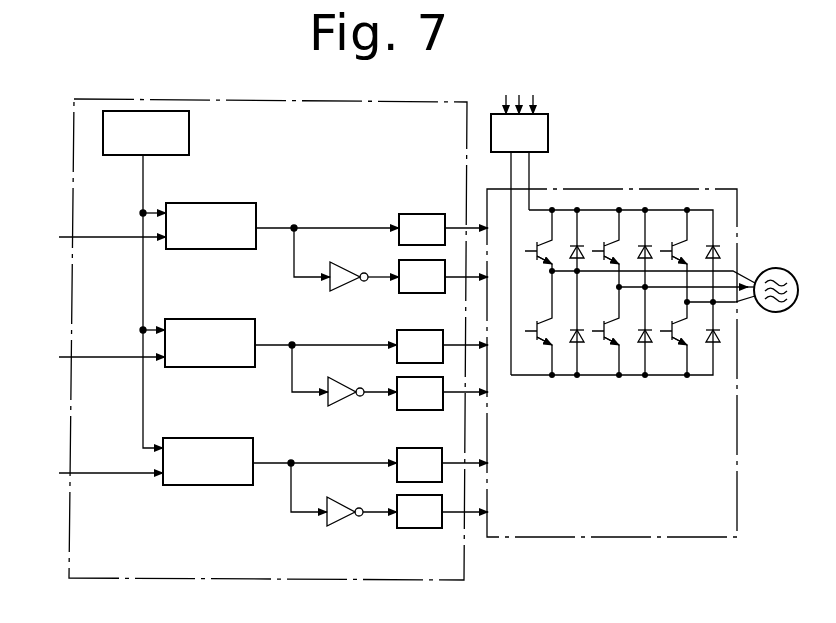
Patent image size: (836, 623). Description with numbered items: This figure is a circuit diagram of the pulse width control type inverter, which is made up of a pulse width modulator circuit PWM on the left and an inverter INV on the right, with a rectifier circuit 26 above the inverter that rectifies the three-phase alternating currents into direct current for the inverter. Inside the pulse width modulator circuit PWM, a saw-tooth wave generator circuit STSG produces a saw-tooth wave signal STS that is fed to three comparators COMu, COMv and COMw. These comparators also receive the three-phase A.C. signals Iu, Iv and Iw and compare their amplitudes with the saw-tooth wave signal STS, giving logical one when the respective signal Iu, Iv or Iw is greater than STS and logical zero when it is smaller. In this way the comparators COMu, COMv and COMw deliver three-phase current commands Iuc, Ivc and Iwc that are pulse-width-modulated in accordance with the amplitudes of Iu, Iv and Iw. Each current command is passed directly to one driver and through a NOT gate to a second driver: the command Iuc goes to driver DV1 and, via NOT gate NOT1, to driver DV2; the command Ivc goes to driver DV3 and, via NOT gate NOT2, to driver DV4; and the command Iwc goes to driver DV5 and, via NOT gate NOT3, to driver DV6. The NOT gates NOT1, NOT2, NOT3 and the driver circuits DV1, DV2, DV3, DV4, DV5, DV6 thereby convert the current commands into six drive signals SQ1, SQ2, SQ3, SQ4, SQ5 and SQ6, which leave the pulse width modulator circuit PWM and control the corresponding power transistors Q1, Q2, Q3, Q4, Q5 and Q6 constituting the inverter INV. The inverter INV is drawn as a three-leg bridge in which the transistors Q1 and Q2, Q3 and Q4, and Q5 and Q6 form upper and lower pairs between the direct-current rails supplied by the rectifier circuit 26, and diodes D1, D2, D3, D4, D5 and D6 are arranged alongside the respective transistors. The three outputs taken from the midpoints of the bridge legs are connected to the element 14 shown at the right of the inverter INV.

The rectifier circuit 26 is at (548, 133).
The induction motor 14 is at (772, 268).
The inverter INV is at (653, 189).
The pulse width modulator circuit PWM is at (278, 580).
The saw-tooth wave generator circuit STSG is at (189, 134).
The saw-tooth wave signal STS is at (163, 301).
The comparator COMu is at (208, 249).
The comparator COMv is at (210, 367).
The comparator COMw is at (204, 485).
The three-phase A.C. signal Iu is at (99, 236).
The three-phase A.C. signal Iv is at (98, 356).
The three-phase A.C. signal Iw is at (97, 472).
The pulse-width-modulated current command Iuc is at (327, 241).
The pulse-width-modulated current command Ivc is at (326, 357).
The pulse-width-modulated current command Iwc is at (325, 476).
The NOT gate NOT1 is at (340, 270).
The NOT gate NOT2 is at (337, 386).
The NOT gate NOT3 is at (336, 506).
The driver DV1 is at (422, 229).
The driver DV2 is at (422, 276).
The driver DV3 is at (420, 346).
The driver DV4 is at (420, 393).
The driver DV5 is at (419, 465).
The driver DV6 is at (419, 511).
The drive signal SQ1 is at (466, 218).
The drive signal SQ2 is at (466, 267).
The drive signal SQ3 is at (465, 335).
The drive signal SQ4 is at (465, 382).
The drive signal SQ5 is at (465, 453).
The drive signal SQ6 is at (465, 502).
The power transistor Q1 is at (537, 240).
The power transistor Q2 is at (537, 323).
The power transistor Q3 is at (604, 248).
The power transistor Q4 is at (604, 331).
The power transistor Q5 is at (672, 256).
The power transistor Q6 is at (672, 335).
The diode D1 is at (588, 292).
The diode D2 is at (585, 347).
The diode D3 is at (656, 292).
The diode D4 is at (654, 347).
The diode D5 is at (724, 259).
The diode D6 is at (722, 347).